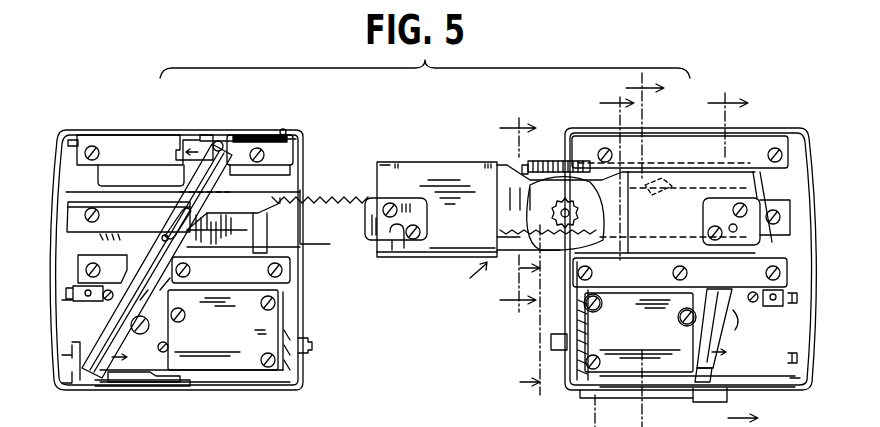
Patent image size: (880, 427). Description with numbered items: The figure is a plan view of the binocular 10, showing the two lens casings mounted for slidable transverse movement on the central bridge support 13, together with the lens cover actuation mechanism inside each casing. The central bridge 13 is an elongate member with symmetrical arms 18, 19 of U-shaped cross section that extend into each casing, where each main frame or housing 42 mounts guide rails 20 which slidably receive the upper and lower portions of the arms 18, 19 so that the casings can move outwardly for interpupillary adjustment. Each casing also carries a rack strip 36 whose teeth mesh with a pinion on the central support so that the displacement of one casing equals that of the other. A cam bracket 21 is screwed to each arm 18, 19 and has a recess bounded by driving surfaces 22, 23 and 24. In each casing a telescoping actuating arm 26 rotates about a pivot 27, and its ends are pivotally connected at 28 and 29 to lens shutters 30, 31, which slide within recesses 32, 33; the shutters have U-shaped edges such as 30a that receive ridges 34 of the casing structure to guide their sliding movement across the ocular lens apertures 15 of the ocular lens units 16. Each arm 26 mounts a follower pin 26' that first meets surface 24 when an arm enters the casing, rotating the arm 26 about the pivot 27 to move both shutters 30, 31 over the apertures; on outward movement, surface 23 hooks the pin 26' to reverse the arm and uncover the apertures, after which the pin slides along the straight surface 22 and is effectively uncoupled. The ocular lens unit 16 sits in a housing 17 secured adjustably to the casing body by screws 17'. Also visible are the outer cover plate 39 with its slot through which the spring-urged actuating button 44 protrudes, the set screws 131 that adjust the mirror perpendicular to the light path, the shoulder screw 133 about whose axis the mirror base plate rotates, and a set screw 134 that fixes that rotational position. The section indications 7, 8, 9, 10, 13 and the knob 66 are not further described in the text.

The section line 7- 7 is at (596, 260).
The section line 8- 8 is at (682, 250).
The section line 9- 9 is at (716, 126).
The binocular 10 is at (517, 310).
The central bridge support 13 is at (493, 215).
The ocular lens aperture 15 is at (187, 384).
The ocular lens unit 16 is at (217, 384).
The housing 17 is at (431, 331).
The screws 17' is at (640, 316).
The arm 18 is at (502, 209).
The arm 19 is at (673, 212).
The guide rail 20 is at (288, 156).
The cam bracket 21 is at (374, 198).
The straight surface 22 is at (372, 242).
The driving surface 23 is at (376, 250).
The driving surface 24 is at (408, 254).
The telescoping actuating arm 26 is at (420, 263).
The pin 26' is at (403, 205).
The pivot 27 is at (140, 262).
The pivotal connection 28 is at (218, 141).
The pivotal connection 29 is at (93, 384).
The lens shutter 30 is at (250, 135).
The U-shaped edge 30a is at (204, 140).
The lens shutter 31 is at (158, 383).
The recess 32 is at (287, 131).
The recess 33 is at (122, 384).
The ridge 34 is at (72, 140).
The rack strip 36 is at (662, 188).
The outer cover plate 39 is at (568, 314).
The housing 42 is at (782, 328).
The actuating button 44 is at (309, 346).
The knurled gear 66 is at (540, 161).
The set screws 131 is at (762, 310).
The shoulder screw 133 is at (728, 352).
The set screw 134 is at (66, 385).